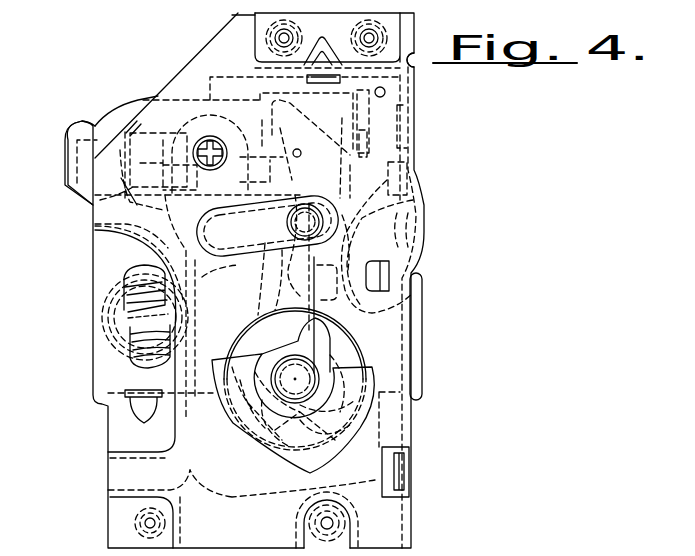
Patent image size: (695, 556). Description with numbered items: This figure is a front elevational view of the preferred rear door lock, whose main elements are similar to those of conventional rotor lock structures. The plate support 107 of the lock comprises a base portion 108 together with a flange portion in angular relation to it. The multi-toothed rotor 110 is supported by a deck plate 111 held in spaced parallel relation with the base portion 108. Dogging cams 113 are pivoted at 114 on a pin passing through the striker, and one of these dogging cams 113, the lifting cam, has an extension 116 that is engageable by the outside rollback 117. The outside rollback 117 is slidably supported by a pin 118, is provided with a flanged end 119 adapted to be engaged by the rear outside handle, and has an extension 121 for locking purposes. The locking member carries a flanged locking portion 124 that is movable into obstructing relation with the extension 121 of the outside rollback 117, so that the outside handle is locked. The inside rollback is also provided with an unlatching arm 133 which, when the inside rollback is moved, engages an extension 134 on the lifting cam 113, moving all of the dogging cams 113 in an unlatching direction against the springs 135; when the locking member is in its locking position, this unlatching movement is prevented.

The plate support 107 is at (428, 27).
The base portion 108 is at (216, 36).
The outside rollback 117 is at (147, 78).
The flanged end 119 is at (66, 143).
The extension 121 is at (410, 79).
The extension 116 is at (304, 121).
The flanged locking portion 124 is at (392, 117).
The unlatching arm 133 is at (413, 172).
The pin 118 is at (209, 167).
The pivot 114 is at (298, 222).
The extension 134 is at (399, 216).
The springs 135 is at (204, 286).
The dogging cams 113 is at (257, 313).
The deck plate 111 is at (407, 303).
The multi-toothed rotor 110 is at (320, 347).